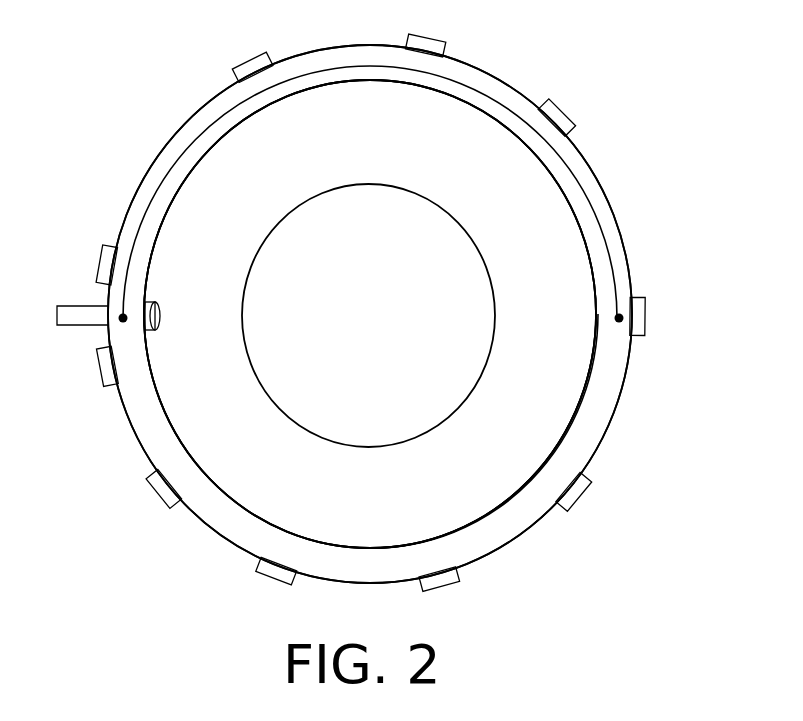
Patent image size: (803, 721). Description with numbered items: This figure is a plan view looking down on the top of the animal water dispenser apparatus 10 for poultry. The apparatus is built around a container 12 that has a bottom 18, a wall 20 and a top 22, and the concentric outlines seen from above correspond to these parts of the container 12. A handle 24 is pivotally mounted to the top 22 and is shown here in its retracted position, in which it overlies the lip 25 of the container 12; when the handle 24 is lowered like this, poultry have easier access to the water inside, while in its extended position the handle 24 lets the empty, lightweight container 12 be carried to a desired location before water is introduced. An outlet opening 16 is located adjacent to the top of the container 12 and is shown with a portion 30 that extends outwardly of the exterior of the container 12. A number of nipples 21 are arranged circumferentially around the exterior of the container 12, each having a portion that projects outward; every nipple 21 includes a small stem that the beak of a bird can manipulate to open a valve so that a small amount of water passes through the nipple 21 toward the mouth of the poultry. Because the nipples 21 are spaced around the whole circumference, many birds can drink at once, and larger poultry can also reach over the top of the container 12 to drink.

The animal water dispenser apparatus 10 is at (692, 309).
The container 12 is at (508, 450).
The outlet opening 16 is at (157, 301).
The bottom 18 is at (368, 340).
The wall 20 is at (289, 509).
The nipples 21 is at (252, 52).
The top 22 is at (618, 408).
The handle 24 is at (572, 151).
The lip 25 is at (513, 523).
The portion 30 is at (75, 326).